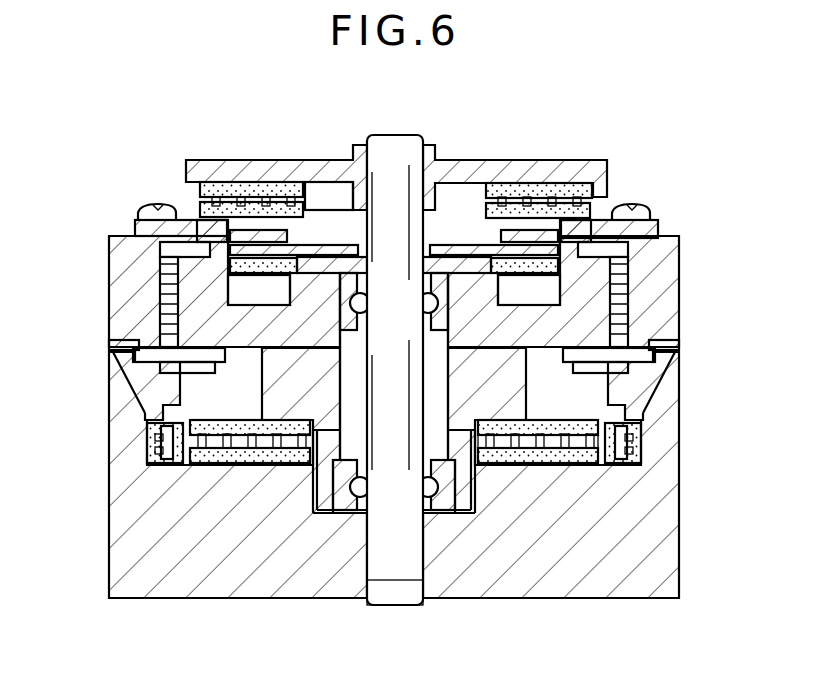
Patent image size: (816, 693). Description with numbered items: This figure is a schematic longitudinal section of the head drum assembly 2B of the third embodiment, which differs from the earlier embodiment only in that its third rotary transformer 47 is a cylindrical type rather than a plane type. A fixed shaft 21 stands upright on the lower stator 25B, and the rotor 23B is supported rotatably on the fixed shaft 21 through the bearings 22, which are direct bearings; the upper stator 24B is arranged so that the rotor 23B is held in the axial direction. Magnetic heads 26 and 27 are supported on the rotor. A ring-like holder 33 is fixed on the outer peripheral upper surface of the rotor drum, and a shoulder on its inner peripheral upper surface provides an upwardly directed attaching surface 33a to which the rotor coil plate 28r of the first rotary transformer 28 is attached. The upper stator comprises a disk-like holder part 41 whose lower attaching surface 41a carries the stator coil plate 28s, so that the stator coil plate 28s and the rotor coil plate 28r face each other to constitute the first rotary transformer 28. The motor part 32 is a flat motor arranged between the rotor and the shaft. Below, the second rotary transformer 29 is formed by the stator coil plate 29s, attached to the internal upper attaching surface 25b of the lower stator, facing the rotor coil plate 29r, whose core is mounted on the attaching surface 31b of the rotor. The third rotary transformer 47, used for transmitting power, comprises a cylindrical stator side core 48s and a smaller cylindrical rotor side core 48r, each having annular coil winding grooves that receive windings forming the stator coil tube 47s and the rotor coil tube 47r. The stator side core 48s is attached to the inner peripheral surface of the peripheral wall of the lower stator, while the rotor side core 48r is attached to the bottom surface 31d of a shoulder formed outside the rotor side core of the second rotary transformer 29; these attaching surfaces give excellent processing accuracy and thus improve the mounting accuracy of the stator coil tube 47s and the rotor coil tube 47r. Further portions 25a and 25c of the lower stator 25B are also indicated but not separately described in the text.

The head drum assembly 2B is at (630, 147).
The fixed shaft 21 is at (397, 143).
The bearings 22 is at (446, 513).
The upper housing 23B is at (752, 280).
The rotor yoke 24B is at (240, 168).
The base 25B is at (755, 597).
The shaft end 25a is at (376, 607).
The attaching surface 25b is at (545, 470).
The base coil portion 25c is at (587, 463).
The magnetic heads 26 is at (110, 345).
The magnetic heads 27 is at (375, 351).
The first rotary transformer 28 is at (566, 190).
The rotor coil plate 28r is at (205, 207).
The stator coil plate 28s is at (218, 185).
The second rotary transformer 29 is at (612, 483).
The rotor coil plate 29r is at (238, 466).
The stator coil plate 29s is at (268, 466).
The attaching surface 31b is at (147, 413).
The bottom surface 31d is at (165, 423).
The motor part 32 is at (320, 258).
The holder 33 is at (650, 230).
The attaching surface 33a is at (605, 207).
The holder part 41 is at (468, 170).
The attaching surface 41a is at (526, 184).
The third rotary transformer 47 is at (147, 435).
The rotor coil tube 47r is at (165, 466).
The stator coil tube 47s is at (147, 462).
The rotor side core 48r is at (632, 395).
The stator side core 48s is at (637, 435).